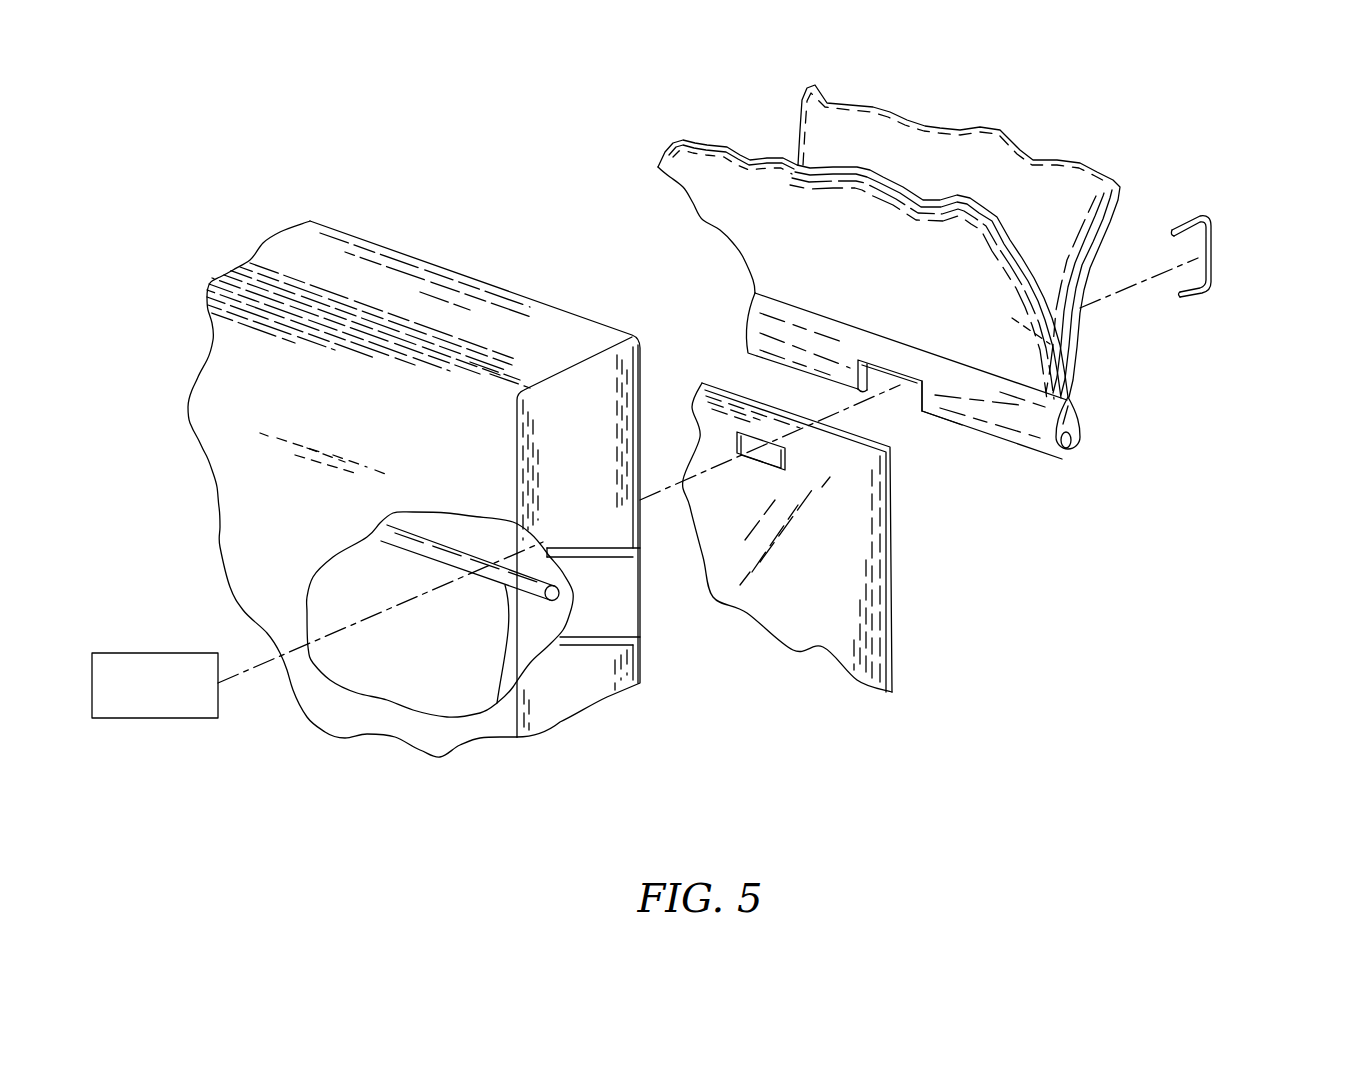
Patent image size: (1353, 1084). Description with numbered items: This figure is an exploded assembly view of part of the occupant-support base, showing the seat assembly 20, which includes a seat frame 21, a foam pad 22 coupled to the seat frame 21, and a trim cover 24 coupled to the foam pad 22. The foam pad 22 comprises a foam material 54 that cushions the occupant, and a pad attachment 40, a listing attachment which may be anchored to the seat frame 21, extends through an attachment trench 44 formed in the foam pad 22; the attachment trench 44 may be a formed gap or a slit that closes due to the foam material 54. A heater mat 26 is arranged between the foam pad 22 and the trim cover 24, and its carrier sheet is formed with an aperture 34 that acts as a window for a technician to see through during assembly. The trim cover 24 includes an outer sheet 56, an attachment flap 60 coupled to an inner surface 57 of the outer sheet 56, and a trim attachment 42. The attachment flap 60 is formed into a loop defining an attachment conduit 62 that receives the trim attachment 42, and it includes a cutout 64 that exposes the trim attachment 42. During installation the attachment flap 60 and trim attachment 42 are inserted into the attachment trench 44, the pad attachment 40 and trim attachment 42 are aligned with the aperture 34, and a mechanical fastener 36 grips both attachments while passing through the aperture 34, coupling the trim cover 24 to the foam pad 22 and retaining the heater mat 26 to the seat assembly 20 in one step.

The seat assembly 20 is at (469, 188).
The seat frame 21 is at (152, 653).
The foam pad 22 is at (400, 237).
The trim cover 24 is at (648, 143).
The heater mat 26 is at (909, 600).
The aperture 34 is at (757, 440).
The mechanical fastener 36 is at (1234, 232).
The pad attachment 40 is at (497, 703).
The trim attachment 42 is at (903, 388).
The attachment trench 44 is at (627, 621).
The foam material 54 is at (542, 300).
The outer sheet 56 is at (1091, 139).
The inner surface 57 is at (1012, 318).
The attachment flap 60 is at (1082, 443).
The attachment conduit 62 is at (1083, 418).
The cutout 64 is at (919, 415).